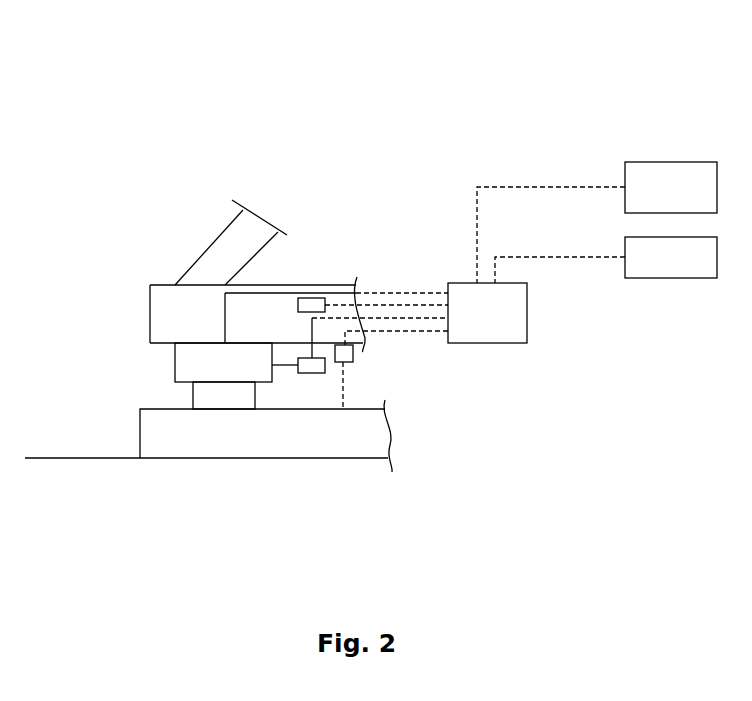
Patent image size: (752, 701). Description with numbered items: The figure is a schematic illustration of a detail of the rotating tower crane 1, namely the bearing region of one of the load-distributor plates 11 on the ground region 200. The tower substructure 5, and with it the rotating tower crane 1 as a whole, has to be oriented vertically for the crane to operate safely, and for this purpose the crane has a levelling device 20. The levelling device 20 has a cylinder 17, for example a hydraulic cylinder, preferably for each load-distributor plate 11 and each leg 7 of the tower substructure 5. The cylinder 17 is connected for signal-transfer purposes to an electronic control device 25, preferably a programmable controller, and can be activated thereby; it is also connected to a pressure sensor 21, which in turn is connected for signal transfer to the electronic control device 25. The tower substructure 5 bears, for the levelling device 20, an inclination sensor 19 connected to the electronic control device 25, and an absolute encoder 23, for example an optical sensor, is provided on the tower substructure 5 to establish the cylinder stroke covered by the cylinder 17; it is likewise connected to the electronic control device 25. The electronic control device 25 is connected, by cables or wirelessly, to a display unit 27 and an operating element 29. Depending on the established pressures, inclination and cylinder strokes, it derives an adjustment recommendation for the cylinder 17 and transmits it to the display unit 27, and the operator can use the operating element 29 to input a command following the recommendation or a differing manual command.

The rotating tower crane 1 is at (148, 86).
The tower substructure 5 is at (128, 211).
The leg 7 is at (223, 248).
The load-distributor plate 11 is at (275, 443).
The cylinder 17 is at (178, 360).
The inclination sensor 19 is at (308, 285).
The levelling device 20 is at (715, 152).
The pressure sensor 21 is at (308, 373).
The absolute encoder 23 is at (350, 358).
The electronic control device 25 is at (508, 332).
The display unit 27 is at (632, 195).
The operating element 29 is at (663, 270).
The ground region 200 is at (103, 488).